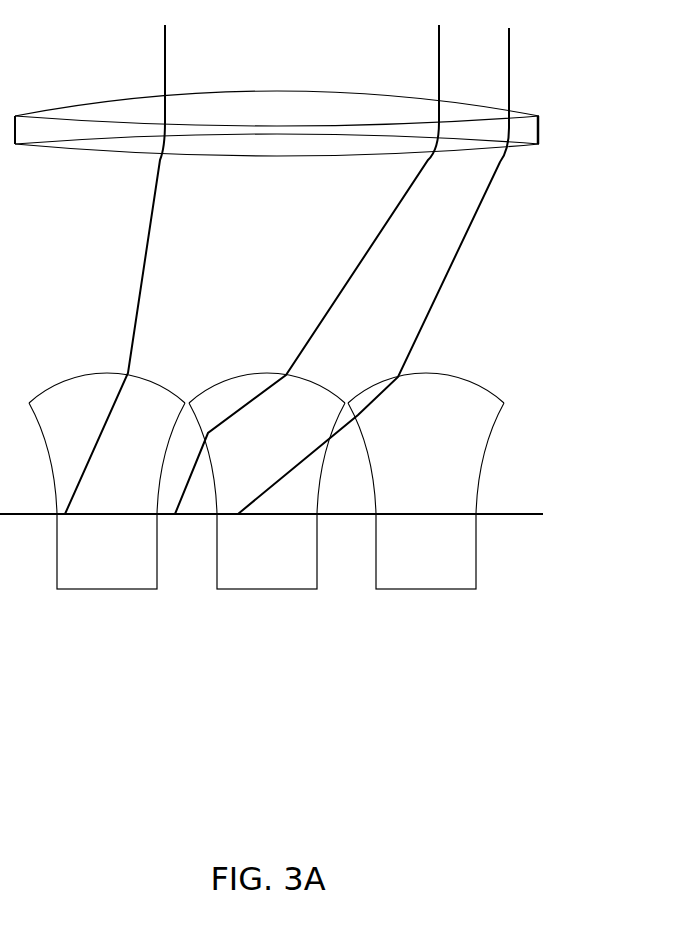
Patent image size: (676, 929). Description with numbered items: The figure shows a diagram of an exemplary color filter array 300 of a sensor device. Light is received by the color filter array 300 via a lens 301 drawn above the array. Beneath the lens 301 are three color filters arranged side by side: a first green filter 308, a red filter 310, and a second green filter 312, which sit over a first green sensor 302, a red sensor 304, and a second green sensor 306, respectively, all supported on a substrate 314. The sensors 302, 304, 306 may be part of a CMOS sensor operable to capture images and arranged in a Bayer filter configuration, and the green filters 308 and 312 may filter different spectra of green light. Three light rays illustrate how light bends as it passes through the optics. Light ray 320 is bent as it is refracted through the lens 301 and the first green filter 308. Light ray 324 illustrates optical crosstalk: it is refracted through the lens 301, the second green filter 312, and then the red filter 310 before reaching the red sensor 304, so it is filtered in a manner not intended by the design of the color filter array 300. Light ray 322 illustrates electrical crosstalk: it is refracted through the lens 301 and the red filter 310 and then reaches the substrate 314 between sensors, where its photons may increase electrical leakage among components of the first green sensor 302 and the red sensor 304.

The color filter array 300 is at (50, 242).
The lens 301 is at (550, 128).
The green 1 sensor 302 is at (107, 551).
The red sensor 304 is at (267, 551).
The green 2 sensor 306 is at (426, 551).
The green 1 filter 308 is at (113, 365).
The red filter 310 is at (267, 365).
The green 2 filter 312 is at (427, 364).
The substrate 314 is at (507, 505).
The light ray 320 is at (120, 259).
The light ray 322 is at (316, 259).
The light ray 324 is at (382, 263).